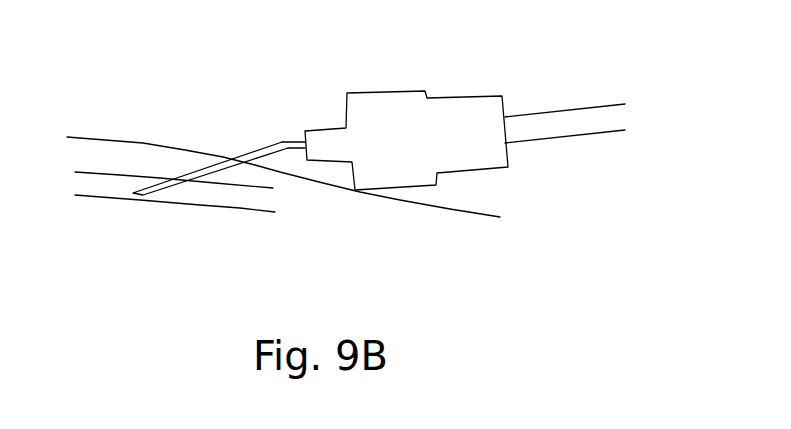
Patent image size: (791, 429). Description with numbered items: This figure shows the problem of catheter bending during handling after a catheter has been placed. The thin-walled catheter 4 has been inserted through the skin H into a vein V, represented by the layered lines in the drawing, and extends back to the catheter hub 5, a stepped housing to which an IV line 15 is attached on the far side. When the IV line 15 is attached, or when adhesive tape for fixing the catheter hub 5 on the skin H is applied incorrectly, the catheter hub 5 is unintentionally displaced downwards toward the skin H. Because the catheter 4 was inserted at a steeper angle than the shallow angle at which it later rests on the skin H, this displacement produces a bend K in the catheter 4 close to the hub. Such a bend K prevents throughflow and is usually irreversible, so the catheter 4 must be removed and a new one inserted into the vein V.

The skin H is at (283, 134).
The vein V is at (175, 228).
The catheter 4 is at (210, 130).
The bend K is at (280, 99).
The catheter hub 5 is at (406, 104).
The IV line 15 is at (565, 87).